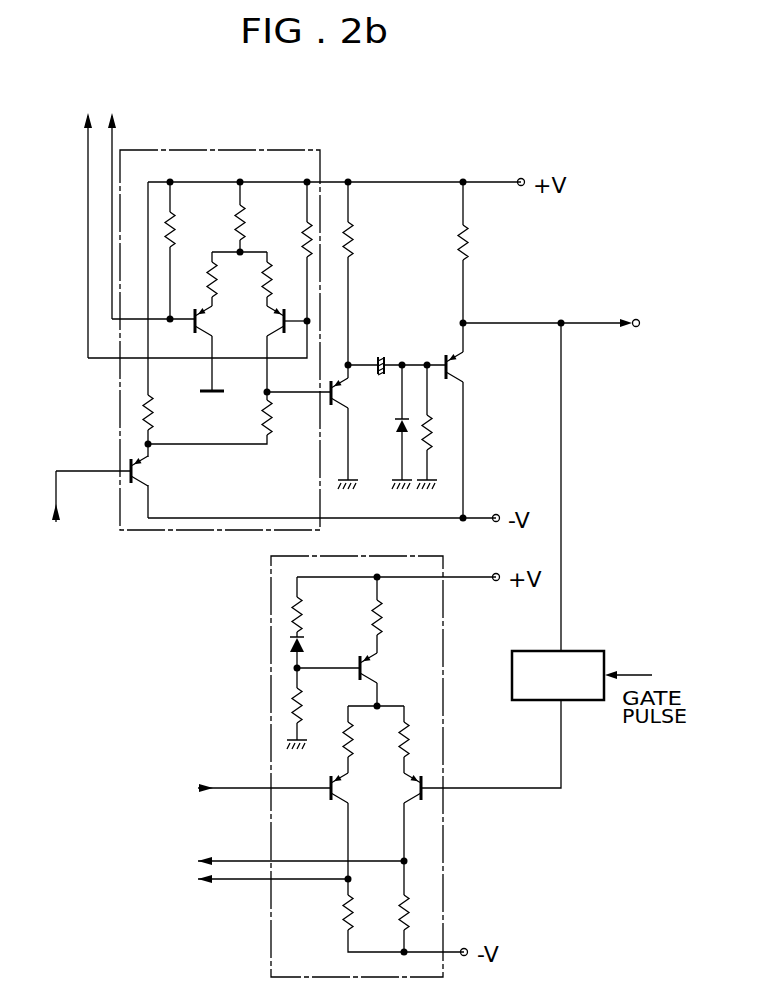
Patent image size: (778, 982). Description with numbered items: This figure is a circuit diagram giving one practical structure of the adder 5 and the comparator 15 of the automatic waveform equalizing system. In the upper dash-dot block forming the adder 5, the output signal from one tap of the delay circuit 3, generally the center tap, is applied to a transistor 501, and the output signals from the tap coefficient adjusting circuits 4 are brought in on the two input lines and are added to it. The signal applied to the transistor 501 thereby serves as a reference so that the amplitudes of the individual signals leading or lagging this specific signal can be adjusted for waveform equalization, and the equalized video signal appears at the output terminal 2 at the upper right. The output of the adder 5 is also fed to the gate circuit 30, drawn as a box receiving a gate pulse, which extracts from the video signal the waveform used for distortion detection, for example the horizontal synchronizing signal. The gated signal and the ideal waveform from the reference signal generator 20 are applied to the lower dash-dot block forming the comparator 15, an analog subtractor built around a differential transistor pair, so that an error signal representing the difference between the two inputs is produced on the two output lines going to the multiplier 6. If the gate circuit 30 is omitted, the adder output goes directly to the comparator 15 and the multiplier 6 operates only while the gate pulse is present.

The output terminal 2 is at (651, 311).
The delay circuit 3 is at (95, 538).
The tap coefficient adjusting circuit 4 is at (264, 111).
The adder 5 is at (311, 134).
The multiplier 6 is at (153, 893).
The comparator 15 is at (271, 597).
The reference signal generator 20 is at (190, 795).
The gate circuit 30 is at (576, 651).
The transistor 501 is at (142, 467).